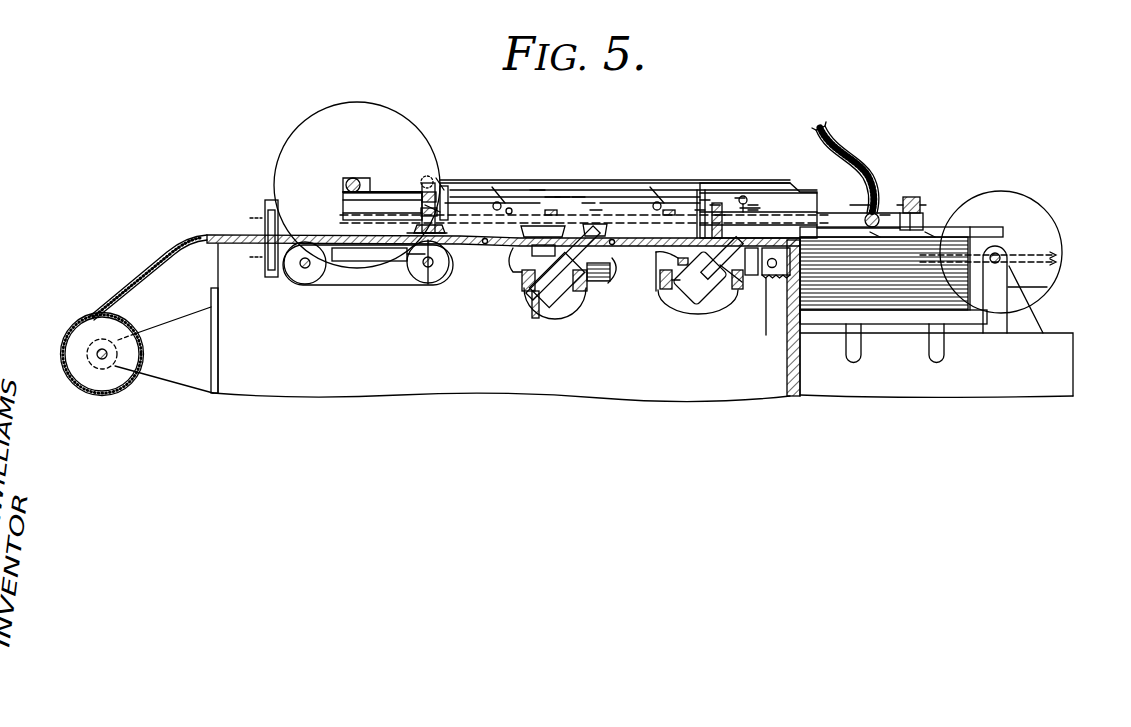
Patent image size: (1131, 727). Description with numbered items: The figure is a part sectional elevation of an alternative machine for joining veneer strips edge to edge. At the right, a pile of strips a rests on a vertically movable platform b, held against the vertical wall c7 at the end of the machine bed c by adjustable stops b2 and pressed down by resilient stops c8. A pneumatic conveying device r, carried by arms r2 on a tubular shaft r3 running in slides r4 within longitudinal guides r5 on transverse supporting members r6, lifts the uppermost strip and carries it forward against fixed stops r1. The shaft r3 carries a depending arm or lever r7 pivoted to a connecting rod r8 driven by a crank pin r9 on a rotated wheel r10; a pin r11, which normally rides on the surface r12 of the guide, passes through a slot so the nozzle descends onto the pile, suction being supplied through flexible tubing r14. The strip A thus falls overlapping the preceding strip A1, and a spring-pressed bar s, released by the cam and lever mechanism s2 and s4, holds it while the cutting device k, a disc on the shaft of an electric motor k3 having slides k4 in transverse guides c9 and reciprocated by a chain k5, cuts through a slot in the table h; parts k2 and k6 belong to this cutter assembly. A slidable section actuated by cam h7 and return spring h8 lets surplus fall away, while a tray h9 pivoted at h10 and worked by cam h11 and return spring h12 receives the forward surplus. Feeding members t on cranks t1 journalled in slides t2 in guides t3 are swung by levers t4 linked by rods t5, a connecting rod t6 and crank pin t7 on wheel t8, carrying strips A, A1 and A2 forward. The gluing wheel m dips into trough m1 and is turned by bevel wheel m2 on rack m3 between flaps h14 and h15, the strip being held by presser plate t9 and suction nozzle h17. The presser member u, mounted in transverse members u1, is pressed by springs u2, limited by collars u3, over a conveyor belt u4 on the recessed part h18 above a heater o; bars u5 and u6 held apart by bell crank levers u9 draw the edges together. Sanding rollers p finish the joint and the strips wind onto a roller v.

The roller v is at (90, 380).
The sanding rollers p is at (268, 204).
The table h is at (466, 247).
The cam h7 is at (799, 330).
The return spring h8 is at (812, 300).
The pivoted flap h14 is at (493, 248).
The pivoted flap h15 is at (622, 248).
The suction nozzle h17 is at (522, 262).
The recessed part h18 is at (343, 250).
The tray h9 is at (701, 210).
The pivot h10 is at (703, 205).
The cam h11 is at (716, 205).
The return spring h12 is at (721, 215).
The presser member u is at (426, 284).
The transverse members u1 is at (404, 200).
The springs u2 is at (345, 212).
The collars u3 is at (437, 210).
The conveyor belt u4 is at (378, 285).
The bar u5 is at (406, 270).
The bar u6 is at (447, 278).
The bell crank levers u9 is at (412, 212).
The heater o is at (363, 268).
The feeding members t is at (562, 195).
The cranks t1 is at (537, 190).
The slides t2 is at (550, 195).
The longitudinal guides t3 is at (422, 204).
The lever t4 is at (830, 138).
The rods t5 is at (578, 195).
The connecting rod t6 is at (587, 200).
The crank pin t7 is at (440, 176).
The wheel t8 is at (297, 135).
The presser plate t9 is at (595, 210).
The strip A is at (732, 238).
The preceding strip A1 is at (621, 215).
The preceding strip A2 is at (483, 232).
The gluing wheel m is at (582, 292).
The trough m1 is at (596, 284).
The bevel wheel m2 is at (528, 292).
The transverse rack m3 is at (536, 318).
The cutting device k is at (728, 287).
The cam bearing k2 is at (737, 292).
The electric motor k3 is at (705, 290).
The slides k4 is at (690, 282).
The chain k5 is at (720, 292).
The cam arm k6 is at (742, 285).
The machine bed c is at (766, 300).
The vertical wall c7 is at (787, 380).
The stops c8 is at (930, 232).
The transverse guides c9 is at (675, 286).
The strips a is at (935, 292).
The platform b is at (880, 318).
The adjustable stops b2 is at (1010, 287).
The pneumatic conveying device r is at (860, 210).
The fixed stops r1 is at (745, 210).
The arms r2 is at (887, 215).
The tubular shaft r3 is at (892, 218).
The slides r4 is at (905, 225).
The longitudinal guides r5 is at (922, 232).
The transverse supporting members r6 is at (915, 228).
The arm or lever r7 is at (878, 232).
The connecting rod r8 is at (1040, 255).
The crank pin r9 is at (1060, 258).
The wheel r10 is at (1050, 275).
The pin r11 is at (876, 196).
The surface r12 is at (852, 216).
The flexible tubing r14 is at (858, 205).
The spring-pressed bar s is at (753, 205).
The cam and lever mechanism s2 is at (741, 200).
The spring part s4 is at (753, 210).